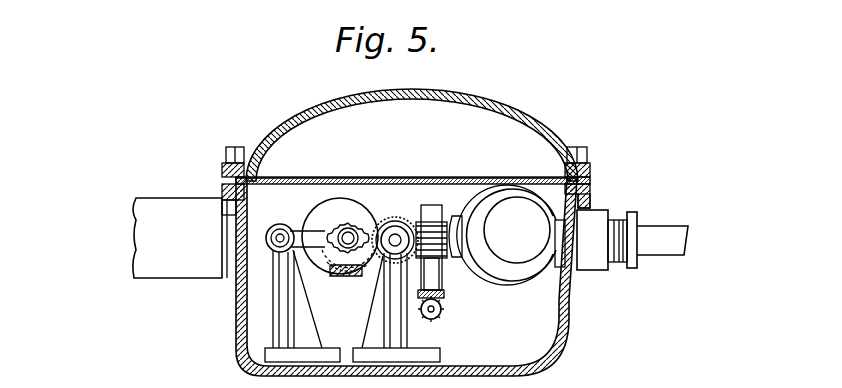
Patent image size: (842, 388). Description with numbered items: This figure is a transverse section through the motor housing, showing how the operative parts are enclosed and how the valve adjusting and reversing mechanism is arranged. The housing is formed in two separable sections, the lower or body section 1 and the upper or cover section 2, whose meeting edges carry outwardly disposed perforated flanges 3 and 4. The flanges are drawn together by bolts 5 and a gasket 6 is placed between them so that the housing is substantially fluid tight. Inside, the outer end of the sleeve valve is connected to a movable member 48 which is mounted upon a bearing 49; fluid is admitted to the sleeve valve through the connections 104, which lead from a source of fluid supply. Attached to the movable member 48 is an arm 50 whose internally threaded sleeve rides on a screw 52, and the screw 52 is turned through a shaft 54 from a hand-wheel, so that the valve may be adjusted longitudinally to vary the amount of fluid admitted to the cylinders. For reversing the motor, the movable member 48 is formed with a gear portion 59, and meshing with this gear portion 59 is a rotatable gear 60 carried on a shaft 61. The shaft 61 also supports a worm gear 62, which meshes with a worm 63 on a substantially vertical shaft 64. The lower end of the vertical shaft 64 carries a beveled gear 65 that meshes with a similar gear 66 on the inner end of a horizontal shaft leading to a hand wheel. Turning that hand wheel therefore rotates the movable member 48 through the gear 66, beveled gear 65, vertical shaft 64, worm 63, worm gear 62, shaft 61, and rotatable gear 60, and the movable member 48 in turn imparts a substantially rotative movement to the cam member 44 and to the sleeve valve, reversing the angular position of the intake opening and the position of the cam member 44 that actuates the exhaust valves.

The lower or body section 1 is at (562, 316).
The upper or cover section 2 is at (512, 128).
The perforated flange 3 is at (590, 190).
The perforated flange 4 is at (586, 166).
The bolt 5 is at (580, 150).
The gasket 6 is at (236, 180).
The cam member 44 is at (348, 222).
The movable member 48 is at (328, 222).
The bearing 49 is at (330, 352).
The arm 50 is at (306, 238).
The screw 52 is at (270, 226).
The shaft 54 is at (340, 275).
The gear portion 59 is at (382, 221).
The rotatable gear 60 is at (396, 217).
The shaft 61 is at (347, 273).
The worm gear 62 is at (430, 214).
The worm 63 is at (440, 228).
The vertical shaft 64 is at (440, 272).
The beveled gear 65 is at (446, 294).
The gear 66 is at (444, 314).
The connections 104 is at (485, 200).